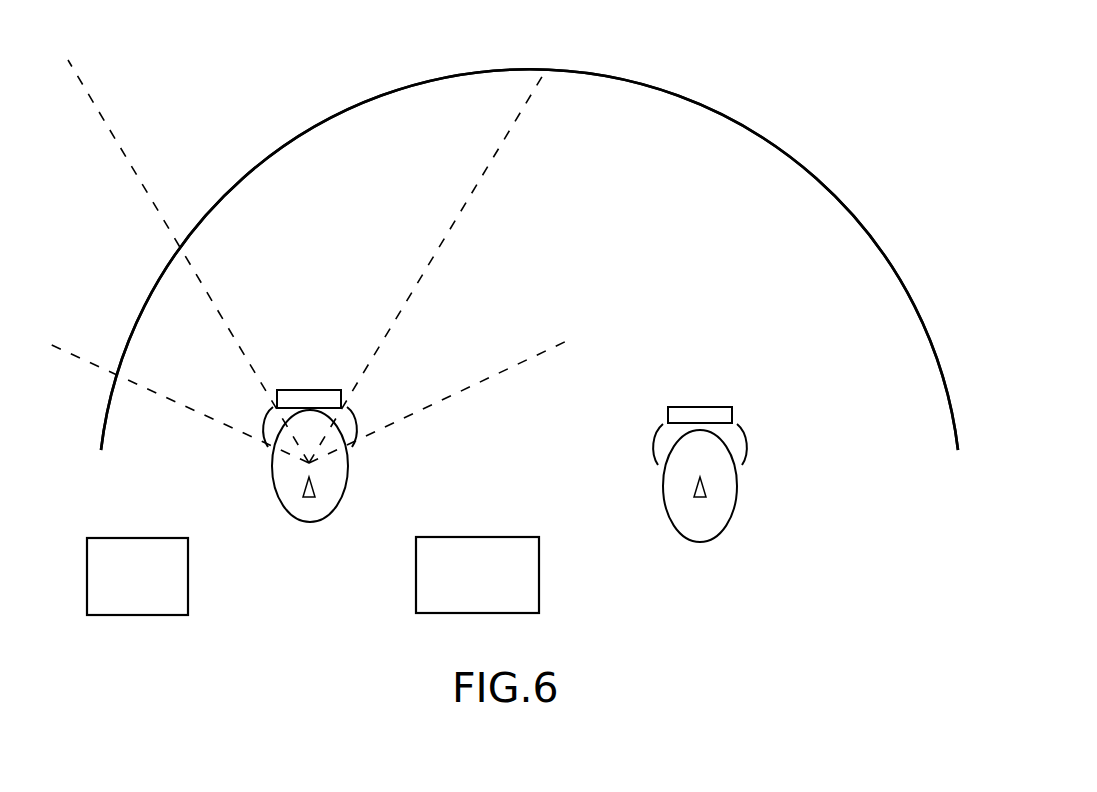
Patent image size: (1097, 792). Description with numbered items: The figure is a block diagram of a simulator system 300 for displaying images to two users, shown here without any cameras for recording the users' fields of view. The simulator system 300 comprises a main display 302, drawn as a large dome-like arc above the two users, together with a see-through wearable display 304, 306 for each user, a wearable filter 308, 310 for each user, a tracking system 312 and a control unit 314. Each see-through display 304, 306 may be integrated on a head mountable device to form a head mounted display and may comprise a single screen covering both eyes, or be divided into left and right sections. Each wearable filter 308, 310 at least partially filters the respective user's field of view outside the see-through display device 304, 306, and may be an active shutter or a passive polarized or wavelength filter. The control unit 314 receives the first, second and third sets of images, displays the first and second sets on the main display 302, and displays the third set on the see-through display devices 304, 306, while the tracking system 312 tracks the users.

The simulator system 300 is at (866, 130).
The main display 302 is at (613, 77).
The see-through wearable display 304 is at (320, 390).
The see-through wearable display 306 is at (706, 407).
The wearable filter 308 is at (262, 420).
The wearable filter 310 is at (654, 442).
The tracking system 312 is at (462, 537).
The control unit 314 is at (130, 538).